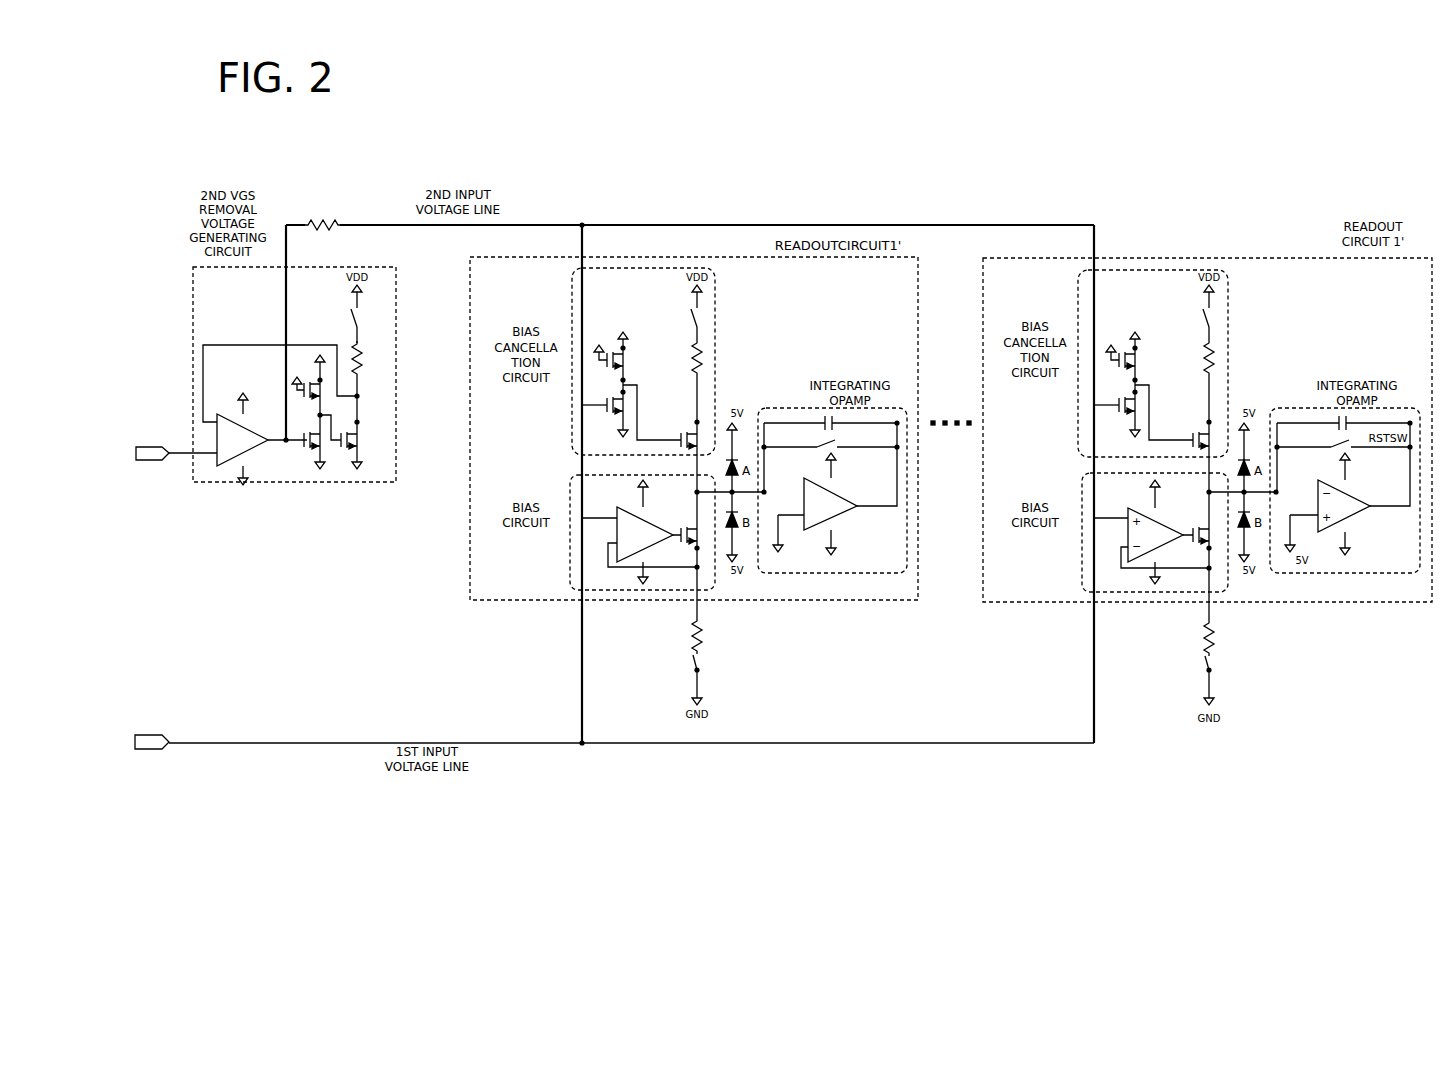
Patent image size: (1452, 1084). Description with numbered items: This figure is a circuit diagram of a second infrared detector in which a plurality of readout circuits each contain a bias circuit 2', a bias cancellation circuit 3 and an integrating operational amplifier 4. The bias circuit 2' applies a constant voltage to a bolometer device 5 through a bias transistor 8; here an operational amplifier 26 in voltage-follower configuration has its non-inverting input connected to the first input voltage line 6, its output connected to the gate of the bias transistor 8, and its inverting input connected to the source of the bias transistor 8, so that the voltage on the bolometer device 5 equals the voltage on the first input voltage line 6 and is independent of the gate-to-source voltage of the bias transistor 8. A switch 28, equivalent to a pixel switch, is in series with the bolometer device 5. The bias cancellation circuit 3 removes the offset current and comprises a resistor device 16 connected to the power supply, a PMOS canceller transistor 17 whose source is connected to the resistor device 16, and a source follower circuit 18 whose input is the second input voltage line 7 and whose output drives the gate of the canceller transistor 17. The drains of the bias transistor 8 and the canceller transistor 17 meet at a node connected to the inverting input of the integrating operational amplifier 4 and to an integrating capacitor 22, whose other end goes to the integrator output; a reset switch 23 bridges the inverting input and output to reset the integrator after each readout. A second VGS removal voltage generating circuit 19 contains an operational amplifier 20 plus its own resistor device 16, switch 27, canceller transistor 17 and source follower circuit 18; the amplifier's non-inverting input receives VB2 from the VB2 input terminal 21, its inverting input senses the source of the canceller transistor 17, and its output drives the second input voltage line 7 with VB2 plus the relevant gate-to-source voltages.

The bias circuit 2' is at (642, 561).
The bias cancellation circuit 3 is at (650, 268).
The integrating operational amplifier 4 is at (925, 405).
The bolometer device 5 is at (745, 640).
The first input voltage line 6 is at (788, 743).
The second input voltage line 7 is at (705, 225).
The bias transistor 8 is at (684, 550).
The resistor device 16 is at (702, 358).
The canceller transistor 17 is at (700, 422).
The source follower circuit 18 is at (626, 382).
The second VGS removal voltage generating circuit 19 is at (400, 293).
The operational amplifier 20 is at (235, 414).
The VB2 input terminal 21 is at (148, 446).
The integrating capacitor 22 is at (790, 416).
The reset switch 23 is at (836, 465).
The operational amplifier 26 is at (617, 512).
The switch 27 is at (690, 312).
The switch 28 is at (700, 658).